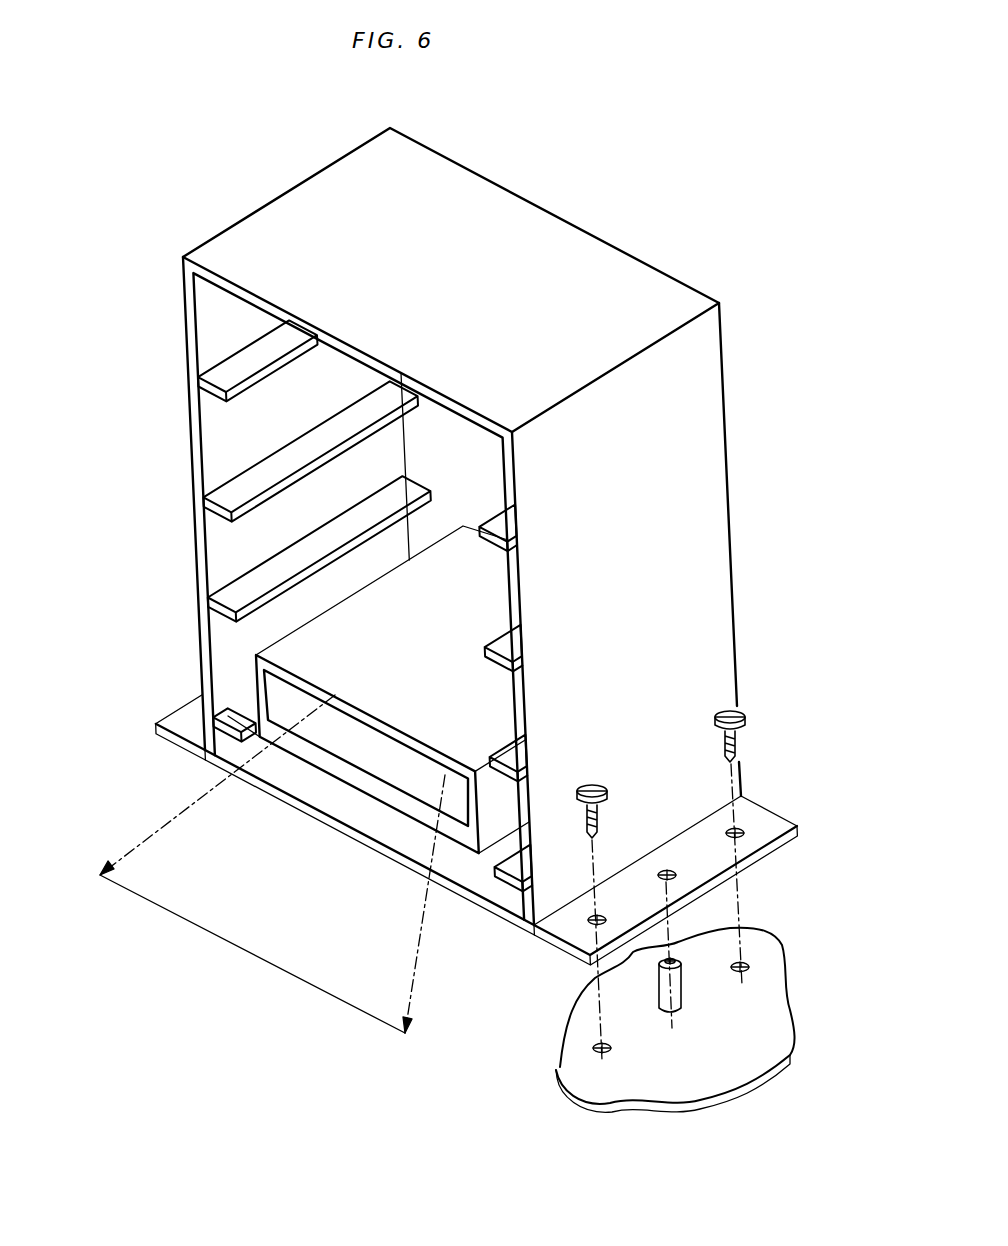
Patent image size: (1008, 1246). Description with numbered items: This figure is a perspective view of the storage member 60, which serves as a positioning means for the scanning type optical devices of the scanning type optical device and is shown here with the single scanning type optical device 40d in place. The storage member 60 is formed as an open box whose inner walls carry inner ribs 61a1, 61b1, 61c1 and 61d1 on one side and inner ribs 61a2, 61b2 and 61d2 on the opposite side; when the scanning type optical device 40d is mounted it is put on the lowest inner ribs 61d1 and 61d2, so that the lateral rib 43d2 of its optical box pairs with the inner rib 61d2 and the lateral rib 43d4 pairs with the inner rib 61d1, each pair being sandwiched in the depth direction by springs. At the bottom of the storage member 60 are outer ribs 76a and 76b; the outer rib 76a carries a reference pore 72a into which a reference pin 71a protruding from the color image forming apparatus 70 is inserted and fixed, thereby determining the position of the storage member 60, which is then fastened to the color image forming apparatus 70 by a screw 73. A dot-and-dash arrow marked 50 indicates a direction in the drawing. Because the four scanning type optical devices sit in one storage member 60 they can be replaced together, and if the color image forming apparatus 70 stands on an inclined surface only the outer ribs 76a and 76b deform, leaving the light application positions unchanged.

The storage member 60 is at (655, 278).
The inner rib 61a1 is at (255, 372).
The inner rib 61b1 is at (260, 483).
The inner rib 61c1 is at (225, 600).
The inner rib 61d1 is at (224, 738).
The inner rib 61a2 is at (500, 518).
The inner rib 61b2 is at (503, 642).
The inner rib 61d2 is at (512, 888).
The scanning type optical device 40d is at (293, 658).
The lateral rib 43d4 is at (233, 710).
The lateral rib 43d2 is at (521, 846).
The outer rib 76b is at (170, 721).
The outer rib 76a is at (773, 818).
The reference pore 72a is at (664, 866).
The screw 73 is at (597, 778).
The color image forming apparatus 70 is at (775, 960).
The reference pin 71a is at (683, 1000).
The insertion direction of unit 50 is at (133, 845).